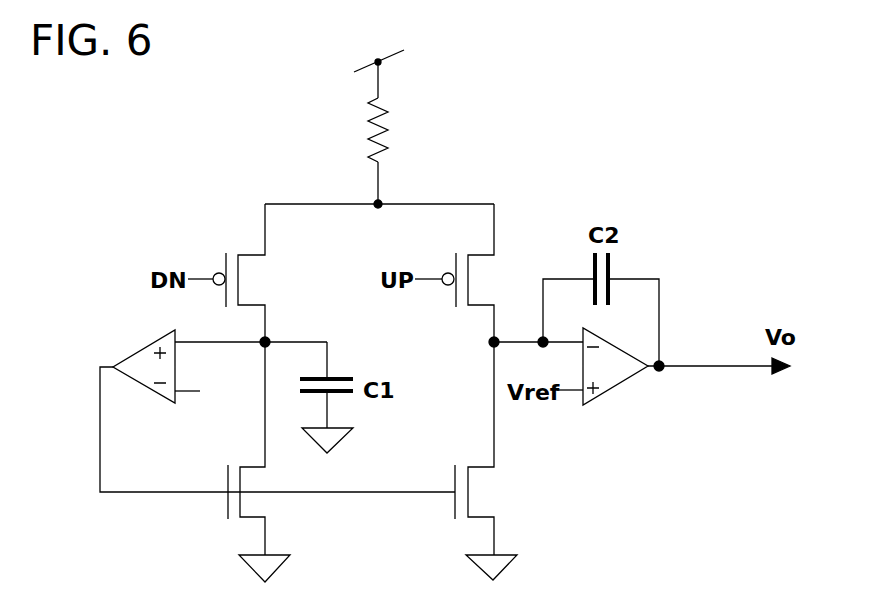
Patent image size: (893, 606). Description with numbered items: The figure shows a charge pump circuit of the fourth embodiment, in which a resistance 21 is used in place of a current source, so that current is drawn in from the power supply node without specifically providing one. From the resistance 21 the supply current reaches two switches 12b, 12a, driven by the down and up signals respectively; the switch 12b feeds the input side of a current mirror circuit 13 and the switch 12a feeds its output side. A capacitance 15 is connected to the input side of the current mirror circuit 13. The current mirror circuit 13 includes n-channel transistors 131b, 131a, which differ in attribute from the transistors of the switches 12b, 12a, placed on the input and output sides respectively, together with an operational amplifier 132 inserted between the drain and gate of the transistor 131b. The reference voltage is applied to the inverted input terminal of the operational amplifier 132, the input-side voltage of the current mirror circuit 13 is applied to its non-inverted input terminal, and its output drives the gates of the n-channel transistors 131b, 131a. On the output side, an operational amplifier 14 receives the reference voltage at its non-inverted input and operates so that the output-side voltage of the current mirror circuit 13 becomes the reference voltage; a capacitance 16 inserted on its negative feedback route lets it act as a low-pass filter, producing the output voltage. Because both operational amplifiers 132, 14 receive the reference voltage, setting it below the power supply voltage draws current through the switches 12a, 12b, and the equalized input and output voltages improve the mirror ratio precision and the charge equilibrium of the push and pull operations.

The resistance 21 is at (372, 139).
The switch 12b is at (256, 253).
The switch 12a is at (480, 253).
The capacitance 15 is at (343, 373).
The capacitance 16 is at (612, 263).
The operational amplifier 14 is at (615, 383).
The current mirror circuit 13 is at (308, 465).
The operational amplifier 132 is at (150, 388).
The n-channel transistor 131b is at (253, 465).
The n-channel transistor 131a is at (478, 465).